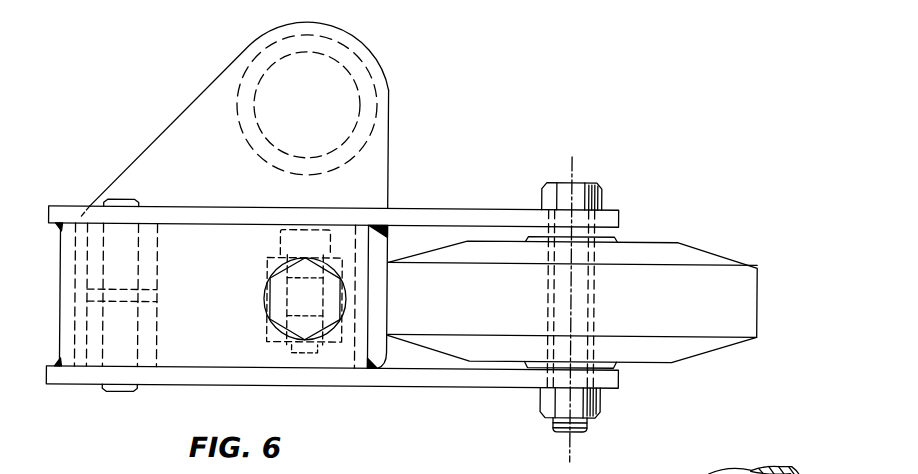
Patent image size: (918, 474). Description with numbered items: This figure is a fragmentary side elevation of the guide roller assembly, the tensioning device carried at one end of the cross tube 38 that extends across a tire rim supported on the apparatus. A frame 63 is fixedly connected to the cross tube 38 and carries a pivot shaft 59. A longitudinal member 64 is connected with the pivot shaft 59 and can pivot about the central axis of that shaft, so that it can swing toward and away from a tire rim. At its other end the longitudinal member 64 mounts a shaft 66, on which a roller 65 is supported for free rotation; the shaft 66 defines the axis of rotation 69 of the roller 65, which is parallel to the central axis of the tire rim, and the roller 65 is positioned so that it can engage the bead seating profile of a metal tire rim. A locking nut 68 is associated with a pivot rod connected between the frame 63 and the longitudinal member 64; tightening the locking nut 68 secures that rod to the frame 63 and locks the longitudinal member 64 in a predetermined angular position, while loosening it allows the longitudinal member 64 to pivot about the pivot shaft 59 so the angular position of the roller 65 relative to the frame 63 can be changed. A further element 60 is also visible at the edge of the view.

The frame 63 is at (200, 94).
The cross tube 38 is at (388, 89).
The longitudinal member 64 is at (423, 218).
The axis of rotation 69 is at (573, 168).
The shaft 66 is at (587, 295).
The roller 65 is at (732, 302).
The pivot shaft 59 is at (140, 334).
The locking nut 68 is at (327, 318).
The roller 60 is at (826, 472).